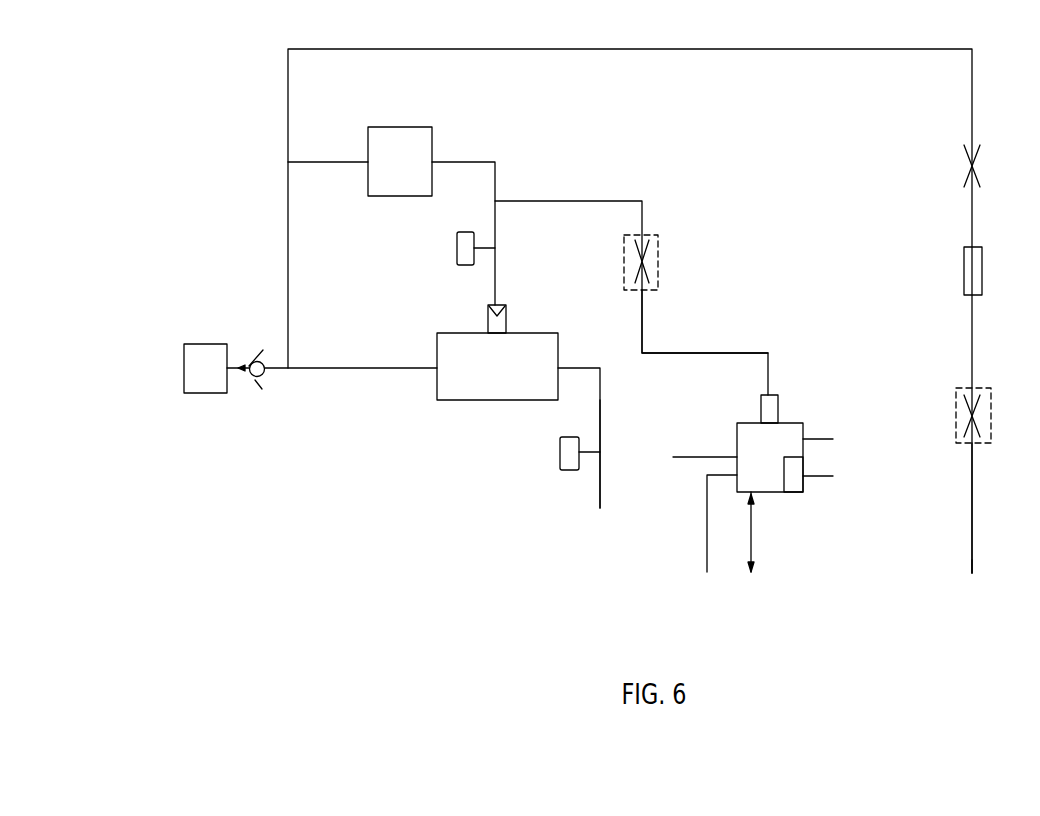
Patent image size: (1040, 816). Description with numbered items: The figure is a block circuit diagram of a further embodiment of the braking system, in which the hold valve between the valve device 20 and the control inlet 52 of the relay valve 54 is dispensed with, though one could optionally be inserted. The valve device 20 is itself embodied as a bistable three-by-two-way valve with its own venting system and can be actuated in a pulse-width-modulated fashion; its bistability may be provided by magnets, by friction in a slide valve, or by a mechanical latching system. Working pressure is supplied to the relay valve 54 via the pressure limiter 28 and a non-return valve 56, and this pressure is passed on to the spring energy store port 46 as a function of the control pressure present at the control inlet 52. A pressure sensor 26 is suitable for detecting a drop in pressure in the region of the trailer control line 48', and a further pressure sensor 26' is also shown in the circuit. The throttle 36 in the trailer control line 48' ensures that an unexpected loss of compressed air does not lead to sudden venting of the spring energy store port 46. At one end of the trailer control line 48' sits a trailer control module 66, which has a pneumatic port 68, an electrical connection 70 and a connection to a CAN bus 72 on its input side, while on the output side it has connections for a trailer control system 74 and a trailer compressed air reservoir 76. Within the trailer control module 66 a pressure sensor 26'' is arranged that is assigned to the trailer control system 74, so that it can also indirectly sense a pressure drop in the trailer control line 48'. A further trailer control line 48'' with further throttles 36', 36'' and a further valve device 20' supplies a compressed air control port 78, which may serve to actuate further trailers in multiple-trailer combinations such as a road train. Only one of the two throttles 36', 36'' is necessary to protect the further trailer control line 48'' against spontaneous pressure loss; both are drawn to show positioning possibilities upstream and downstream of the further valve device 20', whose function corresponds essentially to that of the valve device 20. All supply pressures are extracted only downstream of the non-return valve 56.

The valve device 20 is at (400, 161).
The further valve device 20' is at (945, 271).
The pressure sensor 26 is at (451, 253).
The pressure sensor 26' is at (555, 464).
The pressure sensor 26'' is at (808, 502).
The pressure limiter 28 is at (205, 343).
The throttle 36 is at (668, 262).
The further throttle 36' is at (946, 419).
The further throttle 36'' is at (945, 166).
The spring energy store port 46 is at (602, 469).
The trailer control line 48' is at (705, 321).
The further trailer control line 48'' is at (945, 508).
The control inlet 52 is at (507, 317).
The relay valve 54 is at (457, 401).
The non-return valve 56 is at (262, 389).
The trailer control module 66 is at (750, 456).
The pneumatic port 68 is at (692, 456).
The electrical connection 70 is at (718, 538).
The CAN bus 72 is at (755, 547).
The trailer control system 74 is at (833, 475).
The trailer compressed air reservoir 76 is at (833, 438).
The compressed air control port 78 is at (978, 581).